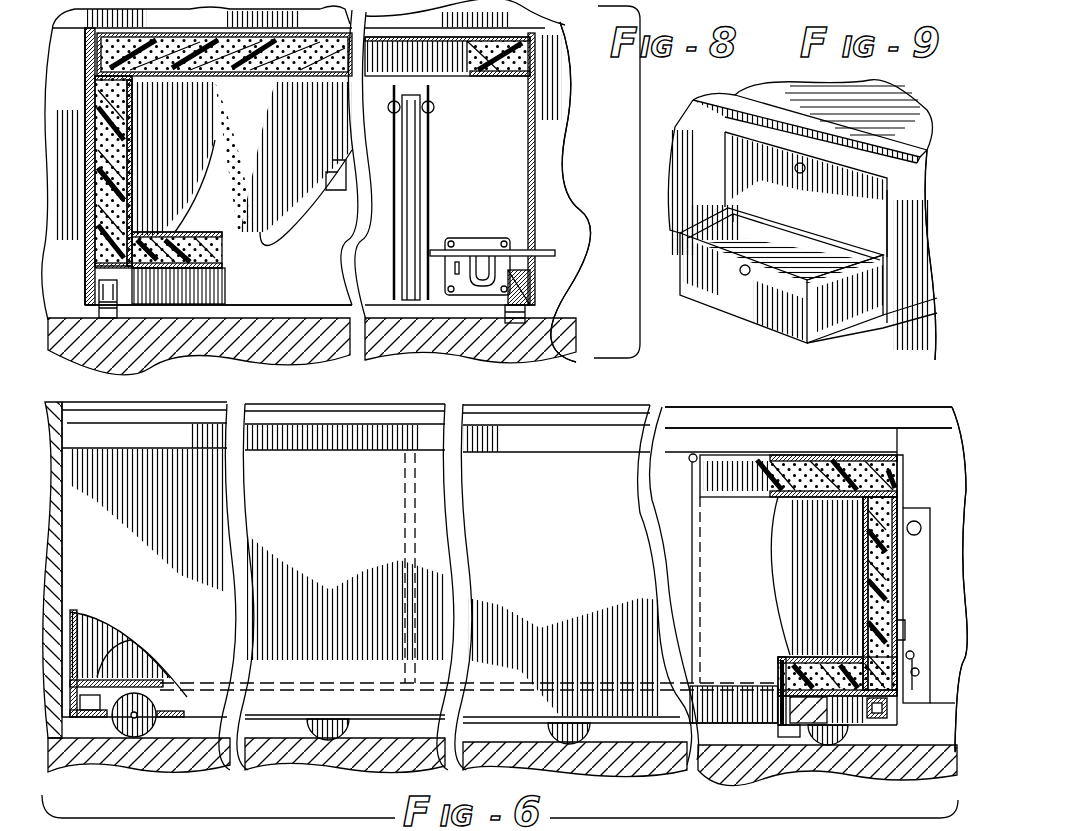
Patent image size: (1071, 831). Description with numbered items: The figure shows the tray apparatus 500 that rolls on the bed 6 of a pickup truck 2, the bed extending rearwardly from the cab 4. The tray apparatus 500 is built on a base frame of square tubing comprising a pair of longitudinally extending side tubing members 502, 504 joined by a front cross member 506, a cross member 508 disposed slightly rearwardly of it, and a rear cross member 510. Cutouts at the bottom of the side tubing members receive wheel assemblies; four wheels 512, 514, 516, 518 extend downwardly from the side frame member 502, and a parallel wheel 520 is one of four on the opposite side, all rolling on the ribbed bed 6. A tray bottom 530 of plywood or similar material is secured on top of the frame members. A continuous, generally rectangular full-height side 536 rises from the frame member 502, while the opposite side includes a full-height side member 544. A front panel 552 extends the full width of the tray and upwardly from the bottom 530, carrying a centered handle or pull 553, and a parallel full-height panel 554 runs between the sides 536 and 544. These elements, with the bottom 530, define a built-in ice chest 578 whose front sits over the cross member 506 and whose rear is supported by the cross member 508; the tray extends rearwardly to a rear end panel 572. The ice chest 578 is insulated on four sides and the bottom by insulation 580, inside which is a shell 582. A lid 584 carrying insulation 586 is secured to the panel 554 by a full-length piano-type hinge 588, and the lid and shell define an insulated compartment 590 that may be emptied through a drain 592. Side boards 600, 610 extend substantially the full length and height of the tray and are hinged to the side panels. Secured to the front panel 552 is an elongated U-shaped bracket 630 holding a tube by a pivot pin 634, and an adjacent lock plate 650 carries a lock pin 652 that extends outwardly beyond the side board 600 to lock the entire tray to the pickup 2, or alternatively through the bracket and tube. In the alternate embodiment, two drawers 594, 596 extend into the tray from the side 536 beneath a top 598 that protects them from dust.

In FIG. 8, the pickup truck 2 is at (397, 367).
In FIG. 6, the pickup truck 2 is at (126, 778).
In FIG. 6, the cab 4 is at (57, 556).
In FIG. 8, the bed 6 is at (295, 318).
In FIG. 6, the bed 6 is at (635, 745).
In FIG. 8, the tray apparatus 500 is at (553, 137).
In FIG. 9, the tray apparatus 500 is at (937, 222).
In FIG. 6, the tray apparatus 500 is at (588, 394).
In FIG. 8, the side tubing member 502 is at (92, 287).
In FIG. 6, the side tubing member 502 is at (843, 725).
In FIG. 8, the side tubing member 504 is at (535, 290).
In FIG. 8, the front cross member 506 is at (185, 300).
In FIG. 6, the front cross member 506 is at (866, 650).
In FIG. 6, the cross member 508 is at (726, 735).
In FIG. 6, the rear cross member 510 is at (100, 652).
In FIG. 8, the wheel 512 is at (103, 322).
In FIG. 6, the wheel 512 is at (800, 738).
In FIG. 6, the wheel 514 is at (570, 742).
In FIG. 6, the wheel 516 is at (330, 740).
In FIG. 6, the wheel 518 is at (140, 738).
In FIG. 8, the wheel 520 is at (513, 323).
In FIG. 8, the tray bottom 530 is at (235, 262).
In FIG. 6, the tray bottom 530 is at (120, 685).
In FIG. 8, the side 536 is at (102, 168).
In FIG. 9, the side 536 is at (920, 335).
In FIG. 6, the side 536 is at (336, 556).
In FIG. 8, the side member 544 is at (561, 77).
In FIG. 8, the front panel 552 is at (524, 232).
In FIG. 6, the front panel 552 is at (875, 502).
In FIG. 8, the handle or pull 553 is at (330, 162).
In FIG. 6, the panel 554 is at (702, 570).
In FIG. 6, the rear end panel 572 is at (96, 617).
In FIG. 6, the ice chest 578 is at (748, 440).
In FIG. 8, the insulation 580 is at (118, 108).
In FIG. 6, the insulation 580 is at (866, 544).
In FIG. 8, the shell 582 is at (118, 142).
In FIG. 6, the shell 582 is at (866, 598).
In FIG. 8, the lid 584 is at (472, 36).
In FIG. 6, the lid 584 is at (866, 455).
In FIG. 8, the insulation 586 is at (288, 45).
In FIG. 6, the insulation 586 is at (884, 471).
In FIG. 6, the hinge 588 is at (699, 455).
In FIG. 6, the insulated compartment 590 is at (798, 512).
In FIG. 6, the drain 592 is at (777, 680).
In FIG. 9, the drawer 594 is at (742, 150).
In FIG. 9, the drawer 596 is at (760, 305).
In FIG. 9, the top 598 is at (755, 97).
In FIG. 8, the side board 600 is at (535, 210).
In FIG. 8, the side board 610 is at (100, 190).
In FIG. 8, the bracket 630 is at (430, 147).
In FIG. 6, the bracket 630 is at (940, 705).
In FIG. 8, the pivot pin 634 is at (432, 108).
In FIG. 6, the pivot pin 634 is at (914, 521).
In FIG. 8, the lock plate 650 is at (508, 238).
In FIG. 6, the lock plate 650 is at (900, 627).
In FIG. 8, the lock pin 652 is at (477, 248).
In FIG. 6, the lock pin 652 is at (925, 690).